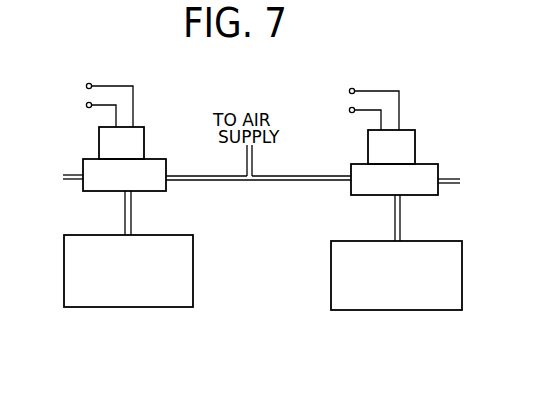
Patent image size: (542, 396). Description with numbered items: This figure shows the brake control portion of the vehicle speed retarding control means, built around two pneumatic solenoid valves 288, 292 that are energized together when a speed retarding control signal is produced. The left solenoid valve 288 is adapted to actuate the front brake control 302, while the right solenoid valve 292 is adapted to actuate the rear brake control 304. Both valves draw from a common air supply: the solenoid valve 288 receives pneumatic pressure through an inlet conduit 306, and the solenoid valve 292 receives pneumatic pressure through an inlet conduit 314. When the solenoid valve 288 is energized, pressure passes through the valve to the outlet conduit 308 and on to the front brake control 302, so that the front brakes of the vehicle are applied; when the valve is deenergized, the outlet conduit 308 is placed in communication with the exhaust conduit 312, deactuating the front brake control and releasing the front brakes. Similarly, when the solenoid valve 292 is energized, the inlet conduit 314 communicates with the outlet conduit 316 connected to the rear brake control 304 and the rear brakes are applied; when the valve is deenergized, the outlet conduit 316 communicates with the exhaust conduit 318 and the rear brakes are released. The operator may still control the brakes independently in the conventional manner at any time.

The solenoid valve 288 is at (98, 125).
The solenoid valve 292 is at (407, 136).
The front brake control 302 is at (188, 275).
The rear brake control 304 is at (337, 270).
The inlet conduit 306 is at (168, 176).
The outlet conduit 308 is at (128, 213).
The exhaust conduit 312 is at (79, 180).
The inlet conduit 314 is at (348, 176).
The outlet conduit 316 is at (395, 216).
The exhaust conduit 318 is at (442, 188).